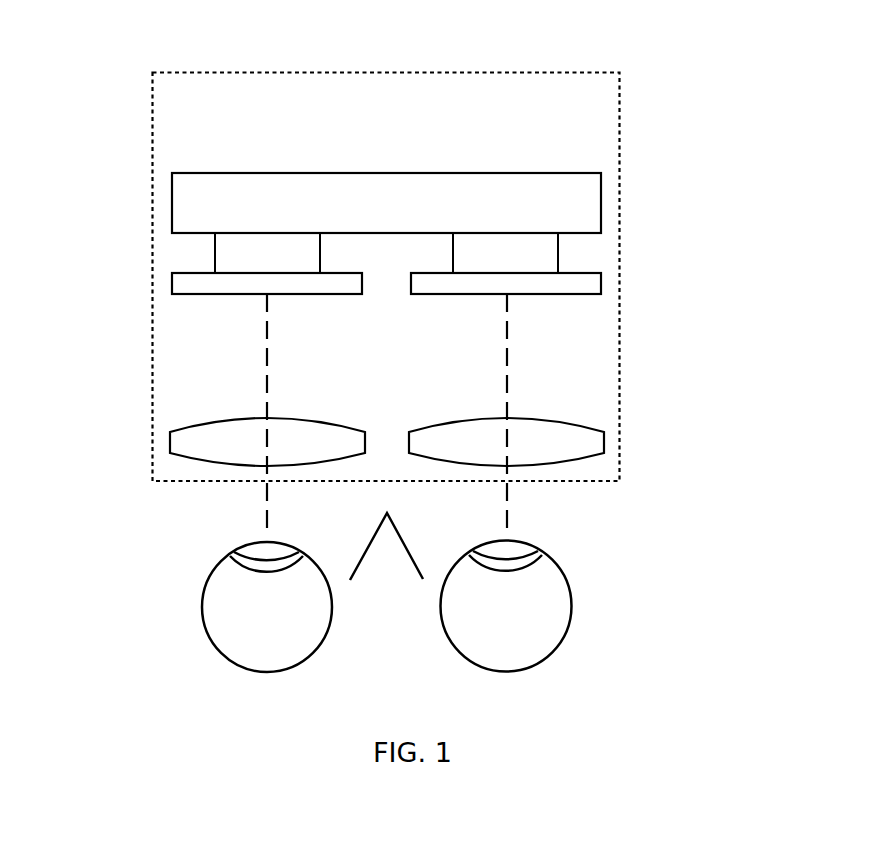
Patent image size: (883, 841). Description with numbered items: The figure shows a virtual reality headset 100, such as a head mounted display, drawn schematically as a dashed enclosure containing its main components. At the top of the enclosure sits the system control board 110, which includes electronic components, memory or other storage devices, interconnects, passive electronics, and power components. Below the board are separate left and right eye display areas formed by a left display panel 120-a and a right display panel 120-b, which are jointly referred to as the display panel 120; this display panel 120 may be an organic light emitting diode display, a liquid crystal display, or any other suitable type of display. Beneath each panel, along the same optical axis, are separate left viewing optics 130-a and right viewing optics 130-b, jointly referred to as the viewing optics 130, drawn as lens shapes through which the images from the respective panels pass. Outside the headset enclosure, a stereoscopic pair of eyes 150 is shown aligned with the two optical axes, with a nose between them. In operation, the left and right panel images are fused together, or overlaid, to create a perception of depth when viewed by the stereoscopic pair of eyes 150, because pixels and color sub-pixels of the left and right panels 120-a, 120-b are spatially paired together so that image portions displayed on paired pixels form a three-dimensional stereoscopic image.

The virtual reality headset 100 is at (285, 73).
The system control board 110 is at (780, 183).
The display panel 120 is at (468, 203).
The left display panel 120-a is at (283, 273).
The right display panel 120-b is at (498, 196).
The viewing optics 130 is at (473, 402).
The left viewing optics 130-a is at (397, 394).
The right viewing optics 130-b is at (722, 462).
The stereoscopic pair of eyes 150 is at (710, 620).